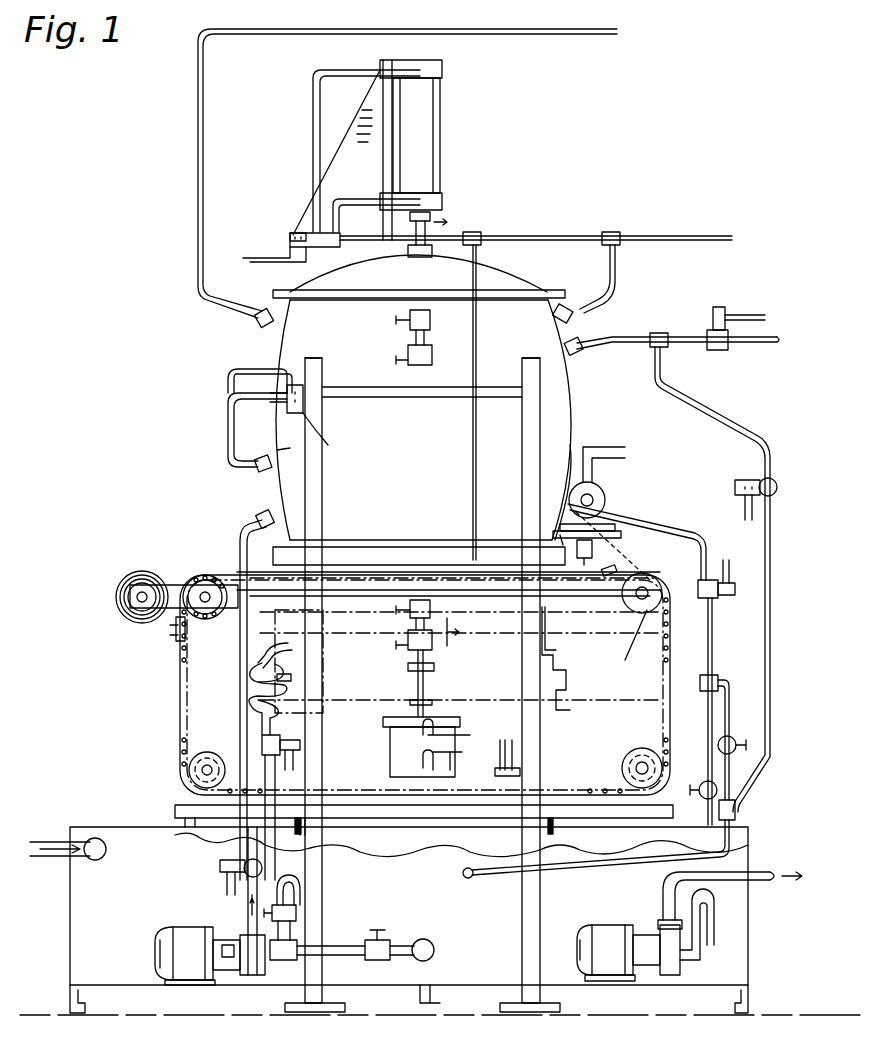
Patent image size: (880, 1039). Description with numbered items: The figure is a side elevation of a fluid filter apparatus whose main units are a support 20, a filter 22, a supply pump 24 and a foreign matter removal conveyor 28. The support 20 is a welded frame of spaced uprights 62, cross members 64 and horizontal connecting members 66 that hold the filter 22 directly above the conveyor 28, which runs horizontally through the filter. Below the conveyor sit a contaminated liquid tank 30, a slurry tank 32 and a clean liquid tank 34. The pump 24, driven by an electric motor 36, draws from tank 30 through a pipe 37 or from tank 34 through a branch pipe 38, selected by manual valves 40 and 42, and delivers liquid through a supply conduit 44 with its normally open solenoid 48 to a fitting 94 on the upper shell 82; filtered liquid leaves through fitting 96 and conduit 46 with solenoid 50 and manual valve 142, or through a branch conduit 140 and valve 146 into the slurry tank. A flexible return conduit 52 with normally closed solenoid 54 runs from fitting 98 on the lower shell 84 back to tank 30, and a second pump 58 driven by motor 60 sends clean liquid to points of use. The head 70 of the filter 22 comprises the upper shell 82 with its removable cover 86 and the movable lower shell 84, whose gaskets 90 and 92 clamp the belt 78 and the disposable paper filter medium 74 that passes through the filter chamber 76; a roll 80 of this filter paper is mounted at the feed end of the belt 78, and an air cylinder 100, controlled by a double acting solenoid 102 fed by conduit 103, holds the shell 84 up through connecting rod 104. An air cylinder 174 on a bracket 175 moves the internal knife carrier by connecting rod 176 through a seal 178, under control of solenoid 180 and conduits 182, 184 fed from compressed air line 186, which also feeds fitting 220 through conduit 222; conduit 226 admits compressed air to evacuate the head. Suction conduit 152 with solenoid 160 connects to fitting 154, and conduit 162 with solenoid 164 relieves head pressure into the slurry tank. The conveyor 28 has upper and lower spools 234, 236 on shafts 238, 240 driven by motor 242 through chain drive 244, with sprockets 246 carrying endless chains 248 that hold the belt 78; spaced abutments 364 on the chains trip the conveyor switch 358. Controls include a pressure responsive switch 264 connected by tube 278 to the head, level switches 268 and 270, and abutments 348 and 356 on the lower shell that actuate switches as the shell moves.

The support 20 is at (550, 902).
The filter 22 is at (545, 279).
The pump 24 is at (256, 970).
The conveyor 28 is at (674, 632).
The tank for contaminated liquid 30 is at (228, 830).
The slurry tank 32 is at (400, 856).
The clean liquid tank 34 is at (582, 848).
The electric motor 36 is at (186, 928).
The pipe 37 is at (291, 885).
The branch pipe 38 is at (340, 957).
The manual shut-off valve 40 is at (298, 912).
The manual shut-off valve 42 is at (394, 936).
The supply conduit 44 is at (237, 682).
The conduit 46 is at (713, 640).
The solenoid 48 is at (220, 870).
The solenoid 50 is at (733, 582).
The return conduit 52 is at (255, 722).
The solenoid 54 is at (262, 745).
The second pump 58 is at (680, 962).
The electric motor 60 is at (616, 926).
The uprights 62 is at (323, 483).
The cross members 64 is at (390, 398).
The horizontal connecting members 66 is at (318, 376).
The head 70 is at (585, 413).
The cleaning cycle filter medium 74 is at (385, 548).
The filter chamber 76 is at (228, 575).
The conveyor belt 78 is at (195, 578).
The roller 80 is at (125, 575).
The upper shell 82 is at (573, 438).
The lower shell 84 is at (555, 657).
The cover 86 is at (488, 276).
The gasket 90 is at (345, 548).
The gasket 92 is at (378, 577).
The fitting 94 is at (264, 510).
The fitting 96 is at (560, 535).
The fitting 98 is at (287, 643).
The air cylinder 100 is at (384, 740).
The double acting solenoid 102 is at (500, 742).
The conduit 103 is at (473, 460).
The connecting rod 104 is at (424, 684).
The branch conduit 140 is at (732, 692).
The manual shut-off valve 142 is at (702, 780).
The manual shut-off valve 146 is at (733, 736).
The conduit 152 is at (614, 338).
The fitting 154 is at (572, 352).
The solenoid 160 is at (721, 351).
The conduit 162 is at (756, 438).
The solenoid 164 is at (760, 478).
The air cylinder 174 is at (440, 143).
The bracket 175 is at (302, 213).
The connecting rod 176 is at (414, 236).
The grommet-like seal 178 is at (422, 252).
The solenoid 180 is at (330, 248).
The conduit 182 is at (350, 202).
The conduit 184 is at (313, 105).
The conduit 186 is at (527, 237).
The fitting 220 is at (553, 317).
The conduit 222 is at (616, 298).
The conduit 226 is at (580, 35).
The upper spools 234 is at (210, 616).
The lower spools 236 is at (641, 748).
The shafts 238 is at (644, 600).
The shafts 240 is at (635, 766).
The electric motor 242 is at (606, 498).
The chain drive 244 is at (638, 550).
The sprockets 246 is at (190, 772).
The endless chains 248 is at (578, 782).
The pressure responsive switch 264 is at (328, 445).
The upper liquid level responsive switch 268 is at (394, 342).
The lower liquid level responsive switch 270 is at (398, 635).
The tube 278 is at (228, 436).
The abutment 348 is at (292, 678).
The abutment 356 is at (560, 690).
The conveyor actuated switch 358 is at (592, 556).
The abutments 364 is at (172, 630).